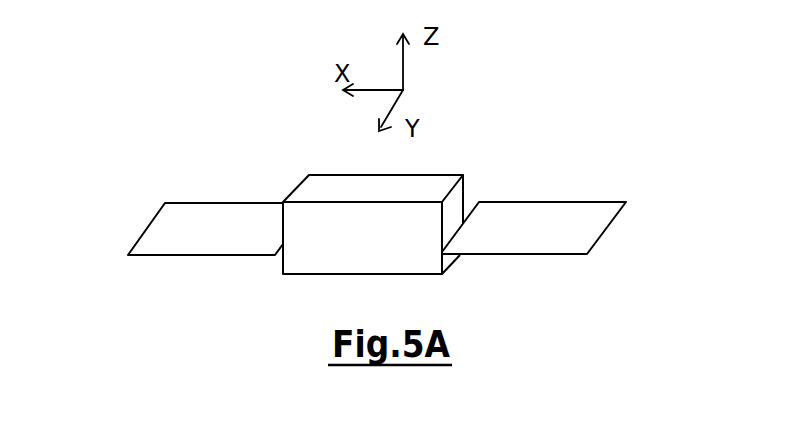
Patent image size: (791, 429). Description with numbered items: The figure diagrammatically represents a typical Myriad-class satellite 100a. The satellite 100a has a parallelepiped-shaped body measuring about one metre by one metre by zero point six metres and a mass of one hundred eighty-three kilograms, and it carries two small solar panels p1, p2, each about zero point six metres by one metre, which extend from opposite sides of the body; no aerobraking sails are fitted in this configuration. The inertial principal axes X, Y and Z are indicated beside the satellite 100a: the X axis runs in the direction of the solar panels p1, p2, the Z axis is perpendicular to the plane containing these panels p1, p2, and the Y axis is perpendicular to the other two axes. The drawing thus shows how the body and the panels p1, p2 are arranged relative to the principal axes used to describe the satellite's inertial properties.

The solar panel p1 is at (187, 220).
The satellite 100a is at (348, 173).
The solar panel p2 is at (547, 213).